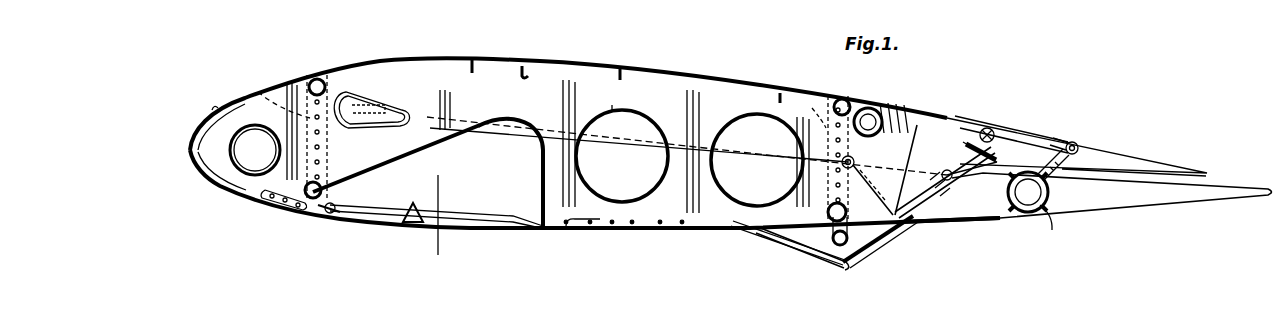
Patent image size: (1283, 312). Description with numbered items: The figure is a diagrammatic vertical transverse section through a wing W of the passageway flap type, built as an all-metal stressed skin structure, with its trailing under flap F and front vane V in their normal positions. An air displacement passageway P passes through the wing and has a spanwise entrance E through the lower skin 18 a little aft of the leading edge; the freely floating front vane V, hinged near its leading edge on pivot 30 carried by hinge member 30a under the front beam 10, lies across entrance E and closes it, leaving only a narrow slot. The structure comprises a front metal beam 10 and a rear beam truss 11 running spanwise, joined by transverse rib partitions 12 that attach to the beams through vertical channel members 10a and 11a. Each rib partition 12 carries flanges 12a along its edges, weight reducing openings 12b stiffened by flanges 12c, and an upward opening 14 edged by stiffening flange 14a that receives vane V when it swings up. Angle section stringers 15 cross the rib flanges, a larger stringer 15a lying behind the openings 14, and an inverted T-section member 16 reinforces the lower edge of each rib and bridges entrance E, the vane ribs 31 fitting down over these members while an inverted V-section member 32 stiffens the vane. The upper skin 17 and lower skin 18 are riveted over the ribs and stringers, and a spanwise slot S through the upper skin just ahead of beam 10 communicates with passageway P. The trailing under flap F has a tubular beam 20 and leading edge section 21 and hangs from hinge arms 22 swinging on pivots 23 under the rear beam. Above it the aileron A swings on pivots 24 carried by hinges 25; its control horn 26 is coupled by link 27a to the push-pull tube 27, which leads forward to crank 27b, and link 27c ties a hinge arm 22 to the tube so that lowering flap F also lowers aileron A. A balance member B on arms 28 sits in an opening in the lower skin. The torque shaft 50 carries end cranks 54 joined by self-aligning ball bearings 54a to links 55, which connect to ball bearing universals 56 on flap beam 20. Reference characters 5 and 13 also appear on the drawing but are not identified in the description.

The station line 5 is at (439, 221).
The front metal beam 10 is at (318, 95).
The vertical channel member 10a is at (268, 95).
The rear beam truss 11 is at (838, 99).
The vertical channel member 11a is at (805, 112).
The rib forming partition 12 is at (228, 188).
The rib flange 12a is at (212, 122).
The weight reducing opening 12b is at (449, 156).
The opening flange 12c is at (603, 98).
The hinge bracket 13 is at (900, 230).
The vane receiving opening 14 is at (396, 158).
The stiffening flange 14a is at (465, 138).
The angle section stringer 15 is at (348, 70).
The spanwise stringer 15a is at (624, 213).
The inverted T-section member 16 is at (280, 210).
The upper metal skin 17 is at (216, 112).
The lower metal skin 18 is at (247, 208).
The tubular spanwise beam 20 is at (1022, 213).
The metal leading edge section 21 is at (977, 219).
The hinge arm 22 is at (930, 235).
The pivot 23 is at (845, 248).
The pivot 24 is at (1018, 130).
The aileron hinge 25 is at (985, 128).
The control horn 26 is at (945, 170).
The push-pull tube 27 is at (757, 160).
The link 27a is at (856, 160).
The forward crank 27b is at (348, 130).
The link 27c is at (885, 170).
The forwardly extending arm 28 is at (822, 262).
The pivot 30 is at (333, 213).
The hinge member 30a is at (332, 218).
The vane rib 31 is at (380, 207).
The inverted V-section member 32 is at (425, 195).
The torque shaft 50 is at (880, 116).
The end crank 54 is at (1056, 140).
The self-aligning ball bearing 54a is at (1078, 146).
The link 55 is at (1060, 168).
The ball bearing universal 56 is at (1054, 227).
The slot S is at (290, 76).
The wing W is at (604, 60).
The air displacement passageway P is at (723, 100).
The front vane V is at (472, 211).
The passageway entrance E is at (546, 238).
The balance member B is at (792, 245).
The aileron A is at (1110, 150).
The trailing under flap F is at (1138, 198).